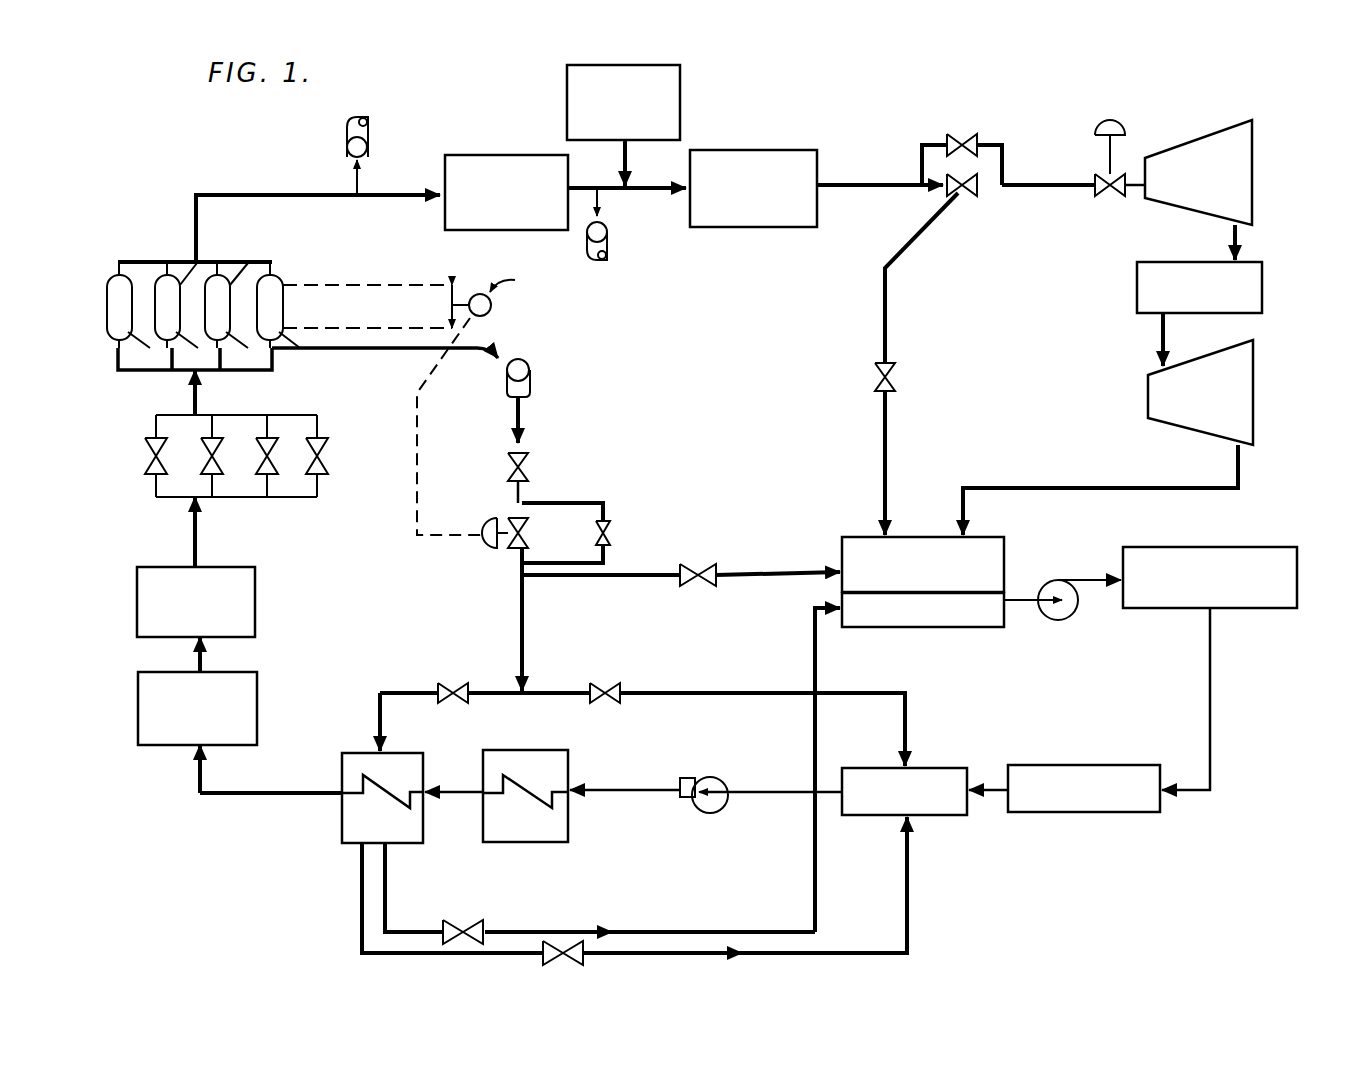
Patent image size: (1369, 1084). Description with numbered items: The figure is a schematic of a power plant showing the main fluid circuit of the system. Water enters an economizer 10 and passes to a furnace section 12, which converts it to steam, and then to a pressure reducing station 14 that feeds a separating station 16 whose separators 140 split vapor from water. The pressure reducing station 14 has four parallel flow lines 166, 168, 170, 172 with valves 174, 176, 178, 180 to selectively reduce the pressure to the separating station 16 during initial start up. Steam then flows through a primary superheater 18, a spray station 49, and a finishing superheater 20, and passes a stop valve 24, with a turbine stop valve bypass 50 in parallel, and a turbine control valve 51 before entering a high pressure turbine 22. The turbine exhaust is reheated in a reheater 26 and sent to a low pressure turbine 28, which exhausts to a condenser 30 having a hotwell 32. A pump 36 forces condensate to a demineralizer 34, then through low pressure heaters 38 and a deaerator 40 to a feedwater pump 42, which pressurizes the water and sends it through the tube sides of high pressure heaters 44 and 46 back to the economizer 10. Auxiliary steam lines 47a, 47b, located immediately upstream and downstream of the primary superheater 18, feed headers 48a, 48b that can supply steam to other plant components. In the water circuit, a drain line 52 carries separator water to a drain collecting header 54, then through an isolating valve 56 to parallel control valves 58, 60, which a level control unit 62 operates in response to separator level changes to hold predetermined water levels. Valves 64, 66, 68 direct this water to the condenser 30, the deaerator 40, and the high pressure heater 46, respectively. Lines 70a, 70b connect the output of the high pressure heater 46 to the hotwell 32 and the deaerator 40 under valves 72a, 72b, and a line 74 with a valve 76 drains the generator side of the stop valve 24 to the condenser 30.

The economizer 10 is at (258, 703).
The furnace section 12 is at (255, 600).
The pressure reducing station 14 is at (234, 450).
The separating station 16 is at (268, 282).
The primary superheater 18 is at (477, 155).
The finishing superheater 20 is at (755, 150).
The high pressure turbine 22 is at (1252, 126).
The stop valve 24 is at (975, 195).
The reheater 26 is at (1262, 275).
The low pressure turbine 28 is at (1255, 390).
The condenser 30 is at (900, 537).
The hotwell 32 is at (945, 627).
The demineralizer 34 is at (1297, 555).
The pump 36 is at (1052, 580).
The low pressure heaters 38 is at (1095, 812).
The deaerator 40 is at (945, 815).
The feedwater pump 42 is at (712, 778).
The high pressure heater 44 is at (568, 750).
The high pressure heater 46 is at (418, 843).
The auxiliary steam line 47a is at (350, 175).
The header 48a is at (347, 137).
The auxiliary steam line 47b is at (603, 207).
The header 48b is at (607, 245).
The spray station 49 is at (567, 92).
The turbine stop valve bypass 50 is at (975, 140).
The turbine control valve 51 is at (1104, 150).
The drain line 52 is at (330, 350).
The drain collecting header 54 is at (530, 370).
The isolating valve 56 is at (508, 467).
The control valve 58 is at (530, 535).
The control valve 60 is at (612, 530).
The level control unit 62 is at (478, 294).
The valve 64 is at (718, 570).
The valve 66 is at (618, 688).
The valve 68 is at (445, 688).
The line 70a is at (555, 930).
The line 70b is at (690, 950).
The valve 72a is at (455, 925).
The valve 72b is at (545, 948).
The line 74 is at (890, 442).
The valve 76 is at (895, 372).
The steam drums 140 is at (262, 262).
The flow line 166 is at (152, 487).
The flow line 168 is at (215, 490).
The flow line 170 is at (270, 420).
The flow line 172 is at (318, 420).
The valve 174 is at (165, 445).
The valve 176 is at (218, 445).
The valve 178 is at (275, 465).
The valve 180 is at (325, 458).